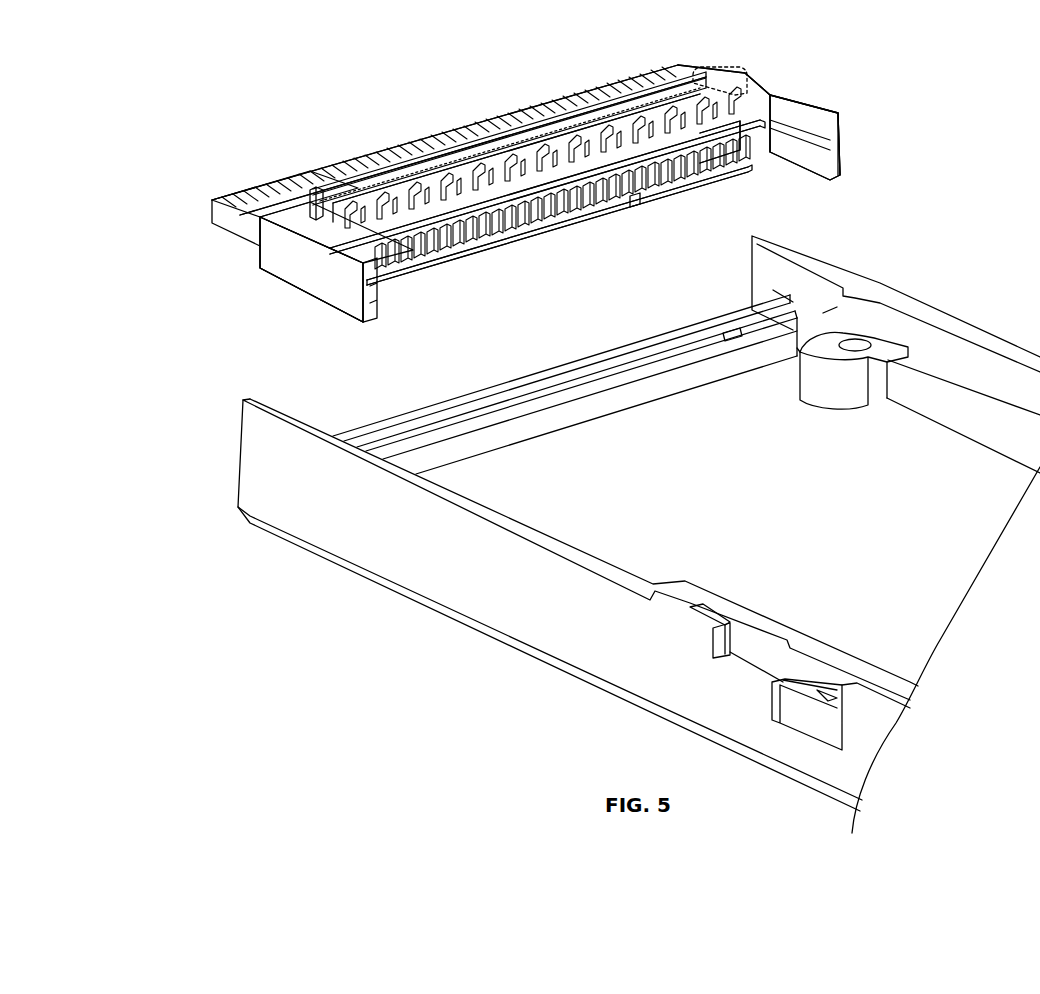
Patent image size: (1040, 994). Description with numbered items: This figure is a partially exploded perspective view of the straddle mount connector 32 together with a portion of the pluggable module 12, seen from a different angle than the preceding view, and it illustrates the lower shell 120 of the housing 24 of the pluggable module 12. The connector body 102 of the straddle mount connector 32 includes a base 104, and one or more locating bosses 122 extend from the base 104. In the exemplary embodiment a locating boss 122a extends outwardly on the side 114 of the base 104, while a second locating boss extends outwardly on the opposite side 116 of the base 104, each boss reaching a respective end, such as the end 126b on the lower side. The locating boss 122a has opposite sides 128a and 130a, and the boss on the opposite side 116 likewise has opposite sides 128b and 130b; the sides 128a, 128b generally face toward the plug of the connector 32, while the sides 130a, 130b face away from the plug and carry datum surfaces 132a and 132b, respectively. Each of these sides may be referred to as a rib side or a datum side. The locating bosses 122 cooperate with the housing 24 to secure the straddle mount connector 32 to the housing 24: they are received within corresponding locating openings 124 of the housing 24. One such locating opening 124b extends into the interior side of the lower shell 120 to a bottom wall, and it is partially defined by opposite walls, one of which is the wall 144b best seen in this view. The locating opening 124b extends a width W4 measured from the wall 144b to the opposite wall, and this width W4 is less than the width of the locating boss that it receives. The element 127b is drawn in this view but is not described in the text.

The pluggable module 12 is at (178, 93).
The housing 24 is at (639, 525).
The straddle mount connector 32 is at (551, 191).
The connector body 102 is at (836, 178).
The base 104 is at (754, 90).
The side 114 is at (757, 82).
The opposite side 116 is at (282, 288).
The lower shell 120 is at (308, 527).
The locating bosses 122 is at (725, 90).
The locating boss 122a is at (388, 183).
The locating openings 124 is at (636, 357).
The locating opening 124b is at (515, 400).
The end 126b is at (596, 228).
The end block 127b is at (683, 185).
The side 128a is at (307, 190).
The side 128b is at (636, 206).
The side 130a is at (583, 124).
The side 130b is at (392, 270).
The datum surface 132a is at (515, 147).
The datum surface 132b is at (525, 234).
The wall 144b is at (700, 345).
The width W4 is at (835, 320).